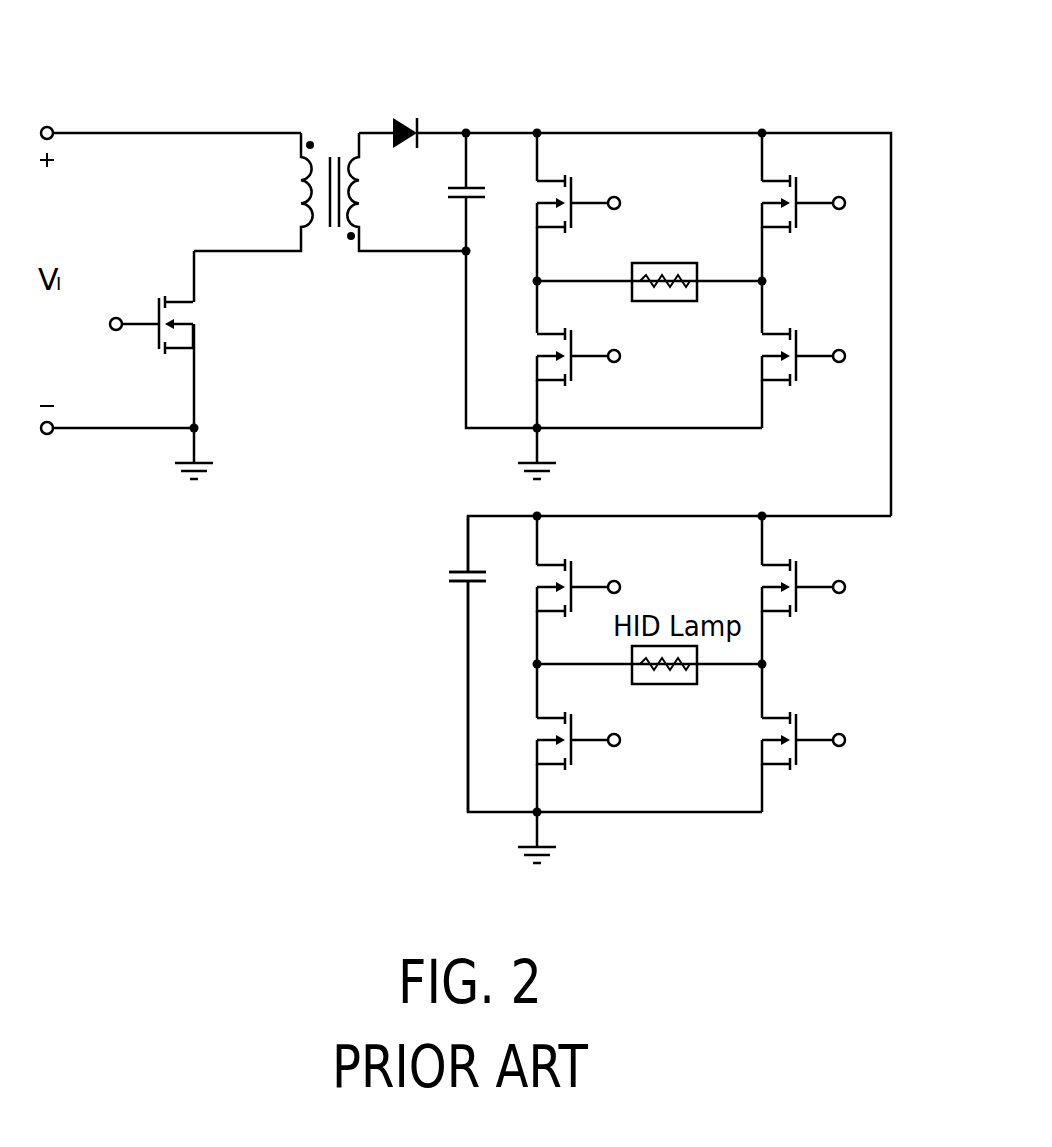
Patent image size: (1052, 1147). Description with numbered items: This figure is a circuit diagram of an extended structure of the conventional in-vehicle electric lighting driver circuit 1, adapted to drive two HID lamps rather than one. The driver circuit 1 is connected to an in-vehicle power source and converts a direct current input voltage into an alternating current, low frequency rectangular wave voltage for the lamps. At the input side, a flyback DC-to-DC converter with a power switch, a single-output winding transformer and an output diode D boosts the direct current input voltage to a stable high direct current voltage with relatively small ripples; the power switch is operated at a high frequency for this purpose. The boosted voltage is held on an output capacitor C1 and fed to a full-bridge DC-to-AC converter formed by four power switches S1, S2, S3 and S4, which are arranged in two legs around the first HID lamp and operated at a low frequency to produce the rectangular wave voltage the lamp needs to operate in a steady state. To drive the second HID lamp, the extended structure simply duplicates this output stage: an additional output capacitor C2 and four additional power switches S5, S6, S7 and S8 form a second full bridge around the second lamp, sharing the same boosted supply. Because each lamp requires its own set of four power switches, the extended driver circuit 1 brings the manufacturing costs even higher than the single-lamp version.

The in-vehicle electric lighting driver circuit 1 is at (677, 261).
The output diode D is at (412, 116).
The output capacitor C1 is at (448, 192).
The additional output capacitor C2 is at (449, 664).
The power switch S1 is at (578, 191).
The power switch S2 is at (578, 344).
The power switch S3 is at (803, 184).
The power switch S4 is at (803, 344).
The additional power switch S5 is at (578, 575).
The additional power switch S6 is at (578, 728).
The additional power switch S7 is at (803, 568).
The additional power switch S8 is at (803, 723).